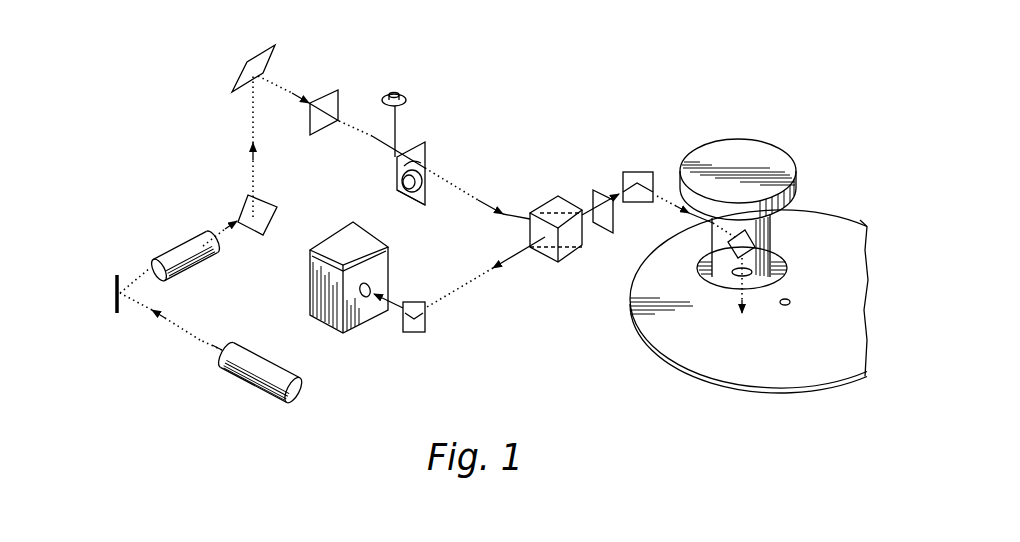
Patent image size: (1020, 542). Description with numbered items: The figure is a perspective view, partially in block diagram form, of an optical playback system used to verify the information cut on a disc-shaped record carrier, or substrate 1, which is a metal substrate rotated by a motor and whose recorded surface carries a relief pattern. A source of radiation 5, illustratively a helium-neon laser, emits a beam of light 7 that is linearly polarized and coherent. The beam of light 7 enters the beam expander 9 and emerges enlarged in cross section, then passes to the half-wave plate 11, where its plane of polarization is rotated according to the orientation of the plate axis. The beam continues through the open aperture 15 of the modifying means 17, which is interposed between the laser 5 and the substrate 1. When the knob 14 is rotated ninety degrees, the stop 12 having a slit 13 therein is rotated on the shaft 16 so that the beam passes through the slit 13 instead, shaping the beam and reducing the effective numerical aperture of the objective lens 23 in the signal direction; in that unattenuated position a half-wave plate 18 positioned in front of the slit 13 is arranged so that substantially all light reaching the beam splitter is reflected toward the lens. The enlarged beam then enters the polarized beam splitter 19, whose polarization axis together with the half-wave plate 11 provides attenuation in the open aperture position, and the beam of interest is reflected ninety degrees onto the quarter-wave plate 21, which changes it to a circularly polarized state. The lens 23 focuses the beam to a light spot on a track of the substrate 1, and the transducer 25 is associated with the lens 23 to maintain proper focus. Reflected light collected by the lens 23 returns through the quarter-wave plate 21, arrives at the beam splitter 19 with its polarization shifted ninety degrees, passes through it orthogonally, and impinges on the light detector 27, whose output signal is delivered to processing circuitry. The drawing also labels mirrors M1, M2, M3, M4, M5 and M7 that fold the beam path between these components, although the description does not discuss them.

The record carrier (substrate) 1 is at (690, 373).
The source of radiation 5 is at (300, 397).
The beam of light 7 is at (200, 342).
The beam expander 9 is at (195, 268).
The half-wave plate 11 is at (316, 99).
The stop 12 is at (405, 197).
The slit 13 is at (403, 178).
The knob 14 is at (400, 92).
The open aperture 15 is at (425, 155).
The shaft 16 is at (395, 130).
The modifying means 17 is at (431, 128).
The half-wave plate 18 is at (425, 197).
The polarized beam splitter 19 is at (546, 238).
The quarter-wave plate 21 is at (598, 192).
The lens 23 is at (733, 277).
The transducer 25 is at (707, 152).
The light detector 27 is at (333, 337).
The mirror M1 is at (123, 308).
The mirror M2 is at (247, 212).
The mirror M3 is at (244, 68).
The mirror M4 is at (638, 199).
The mirror M5 is at (728, 247).
The mirror M7 is at (427, 320).